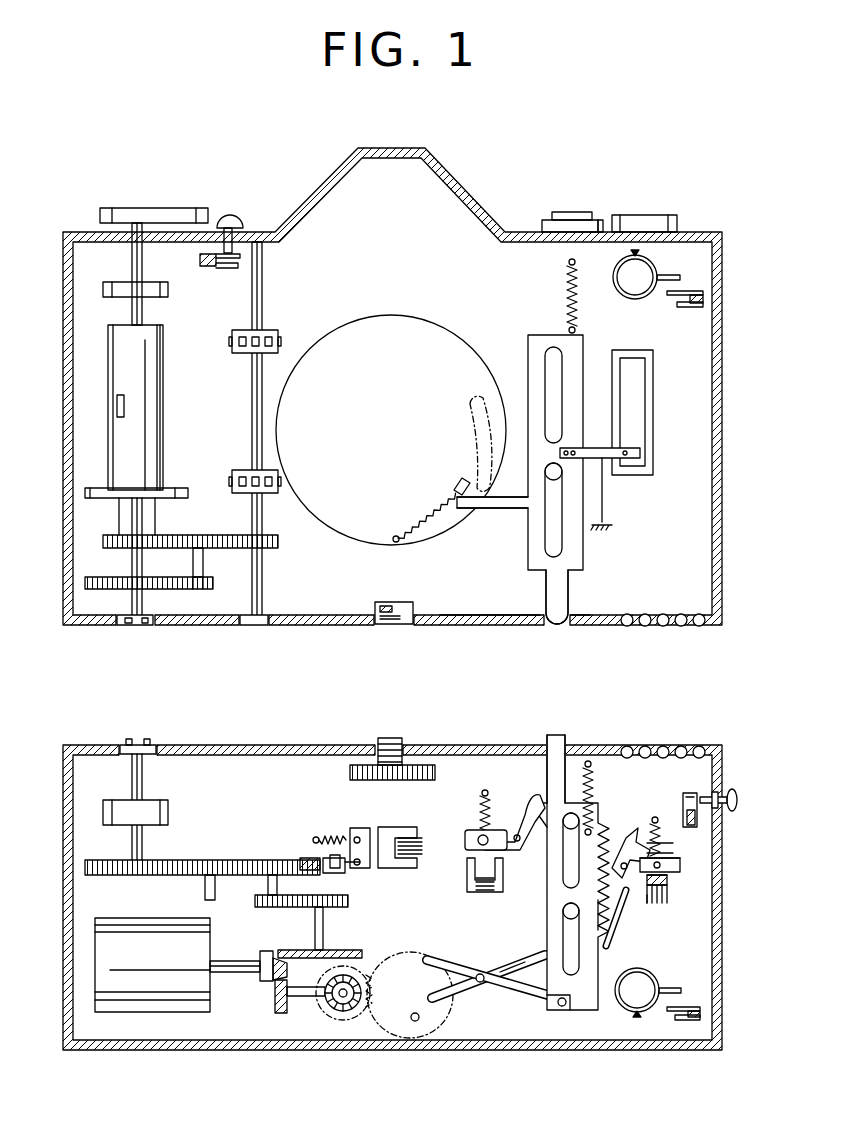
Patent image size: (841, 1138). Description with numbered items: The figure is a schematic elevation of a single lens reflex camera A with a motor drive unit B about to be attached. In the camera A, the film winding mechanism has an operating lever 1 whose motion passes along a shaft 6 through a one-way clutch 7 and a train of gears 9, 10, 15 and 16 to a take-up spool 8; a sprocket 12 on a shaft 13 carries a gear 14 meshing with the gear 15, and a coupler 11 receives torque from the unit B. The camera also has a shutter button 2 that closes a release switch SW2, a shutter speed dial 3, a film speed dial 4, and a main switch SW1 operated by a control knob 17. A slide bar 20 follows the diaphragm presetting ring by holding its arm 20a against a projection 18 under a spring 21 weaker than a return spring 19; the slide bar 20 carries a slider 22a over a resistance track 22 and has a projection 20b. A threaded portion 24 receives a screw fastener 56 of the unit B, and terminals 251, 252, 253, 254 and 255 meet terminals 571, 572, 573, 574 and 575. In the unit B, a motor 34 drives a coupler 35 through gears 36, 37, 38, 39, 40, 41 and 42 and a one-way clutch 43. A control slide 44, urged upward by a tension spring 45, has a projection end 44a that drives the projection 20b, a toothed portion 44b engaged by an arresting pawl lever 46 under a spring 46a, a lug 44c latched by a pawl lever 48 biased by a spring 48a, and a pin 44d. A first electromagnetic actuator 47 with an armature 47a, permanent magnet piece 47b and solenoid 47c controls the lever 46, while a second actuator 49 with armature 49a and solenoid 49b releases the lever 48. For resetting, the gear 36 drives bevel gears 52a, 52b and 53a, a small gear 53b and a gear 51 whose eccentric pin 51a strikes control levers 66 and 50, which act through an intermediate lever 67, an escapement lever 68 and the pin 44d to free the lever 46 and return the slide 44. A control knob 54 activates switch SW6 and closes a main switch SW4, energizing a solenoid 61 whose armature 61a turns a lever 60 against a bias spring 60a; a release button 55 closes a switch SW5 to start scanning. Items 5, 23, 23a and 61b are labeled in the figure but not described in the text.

The single lens reflex camera A is at (722, 430).
The motor drive unit B is at (722, 920).
The operating lever 1 is at (160, 208).
The shutter button 2 is at (231, 215).
The shutter speed dial 3 is at (572, 212).
The film speed dial 4 is at (600, 220).
The dial 5 is at (657, 215).
The shaft 6 is at (142, 268).
The one-way clutch 7 is at (168, 292).
The take-up spool 8 is at (163, 408).
The gear 9 is at (150, 537).
The gear 10 is at (147, 581).
The coupler 11 is at (148, 626).
The sprocket 12 is at (272, 332).
The shaft 13 is at (262, 285).
The gear 14 is at (278, 542).
The gear 15 is at (198, 548).
The gear 16 is at (212, 584).
The control knob 17 is at (633, 300).
The rearwardly extending projection 18 is at (460, 480).
The return spring 19 is at (438, 513).
The slide bar 20 is at (583, 556).
The arm 20a is at (494, 508).
The projection 20b is at (546, 600).
The spring 21 is at (566, 298).
The resistance track 22 is at (640, 418).
The slider 22a is at (609, 460).
The bottom wall 23 is at (505, 626).
The opening 23a is at (548, 626).
The threaded portion 24 is at (390, 625).
The terminal 251 is at (627, 626).
The terminal 252 is at (645, 626).
The terminal 253 is at (663, 626).
The terminal 254 is at (681, 626).
The terminal 255 is at (699, 626).
The main switch SW1 is at (680, 307).
The release switch SW2 is at (243, 268).
The main switch SW4 is at (690, 1007).
The switch SW5 is at (700, 795).
The switch SW6 is at (318, 858).
The electric motor 34 is at (210, 990).
The coupler 35 is at (150, 755).
The skew bevel gear 36 is at (268, 951).
The gear 37 is at (343, 950).
The gear 38 is at (348, 900).
The gear 39 is at (255, 902).
The gear 40 is at (270, 872).
The gear 41 is at (203, 878).
The gear 42 is at (128, 876).
The one-way clutch 43 is at (168, 815).
The control slide 44 is at (558, 888).
The projection end 44a is at (552, 747).
The toothed portion 44b is at (605, 912).
The lug 44c is at (545, 830).
The pin 44d is at (562, 1008).
The tension spring 45 is at (592, 800).
The arresting pawl lever 46 is at (632, 845).
The spring 46a is at (660, 848).
The first electromagnetic actuator 47 is at (672, 893).
The armature 47a is at (680, 865).
The permanent magnet piece 47b is at (668, 880).
The solenoid 47c is at (650, 905).
The pawl lever 48 is at (518, 818).
The bias spring 48a is at (483, 818).
The second electromagnetic actuator 49 is at (467, 880).
The armature 49a is at (468, 832).
The solenoid 49b is at (487, 894).
The second control lever 50 is at (518, 995).
The gear 51 is at (410, 955).
The eccentric pin 51a is at (419, 1017).
The bevel gear 52a is at (279, 1000).
The bevel gear 52b is at (317, 996).
The bevel gear 53a is at (348, 988).
The small gear 53b is at (345, 1022).
The control knob 54 is at (646, 975).
The release button 55 is at (738, 800).
The screw fastener 56 is at (350, 775).
The terminal 571 is at (627, 746).
The terminal 572 is at (645, 758).
The terminal 573 is at (663, 746).
The terminal 574 is at (681, 758).
The terminal 575 is at (699, 746).
The lever 60 is at (345, 873).
The bias spring 60a is at (333, 836).
The solenoid 61 is at (400, 828).
The armature 61a is at (365, 830).
The coil 61b is at (420, 850).
The first control lever 66 is at (512, 966).
The intermediate lever 67 is at (538, 953).
The escapement lever 68 is at (620, 882).